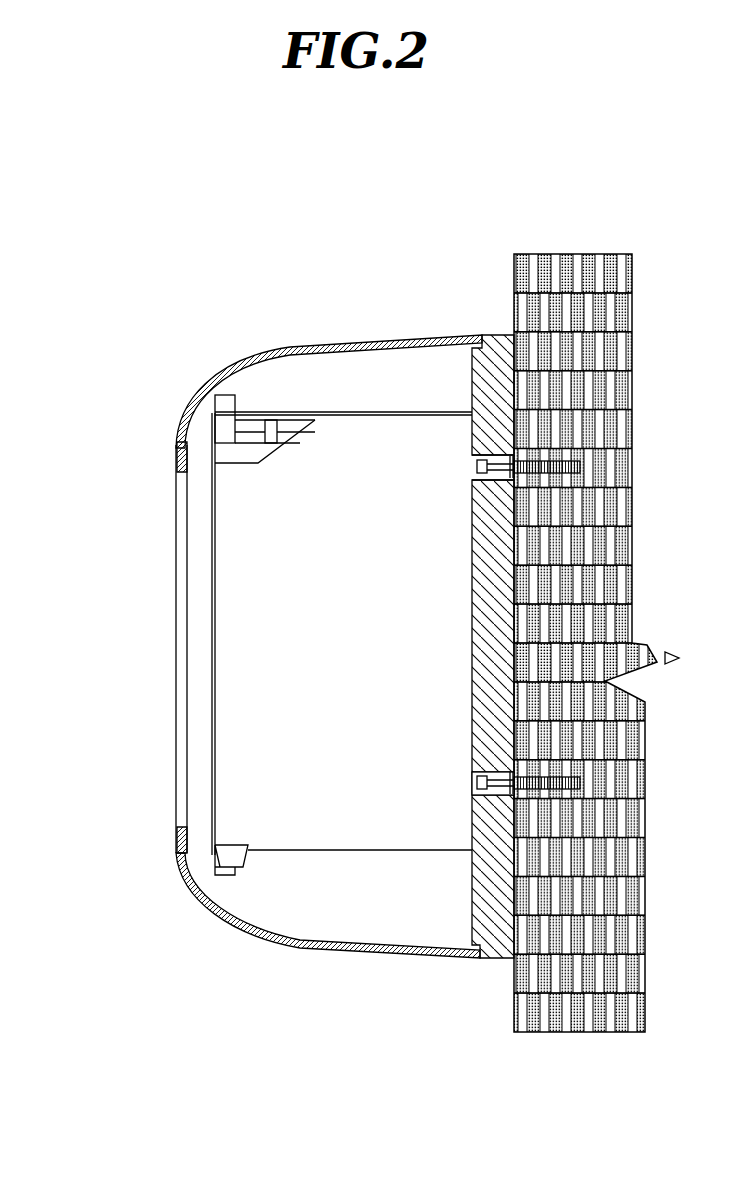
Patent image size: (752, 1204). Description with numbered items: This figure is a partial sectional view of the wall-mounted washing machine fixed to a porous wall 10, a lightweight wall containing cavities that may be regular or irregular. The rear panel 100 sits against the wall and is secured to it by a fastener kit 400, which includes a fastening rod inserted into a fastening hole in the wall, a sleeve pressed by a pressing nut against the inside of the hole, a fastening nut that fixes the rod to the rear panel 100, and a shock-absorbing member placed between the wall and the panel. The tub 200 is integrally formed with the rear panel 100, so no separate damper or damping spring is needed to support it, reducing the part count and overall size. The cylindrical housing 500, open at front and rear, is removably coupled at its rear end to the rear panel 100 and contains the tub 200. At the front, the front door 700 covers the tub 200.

The porous wall 10 is at (516, 985).
The rear panel 100 is at (498, 353).
The tub 200 is at (310, 430).
The fastener kit 400 is at (466, 455).
The housing 500 is at (392, 338).
The front door 700 is at (184, 780).